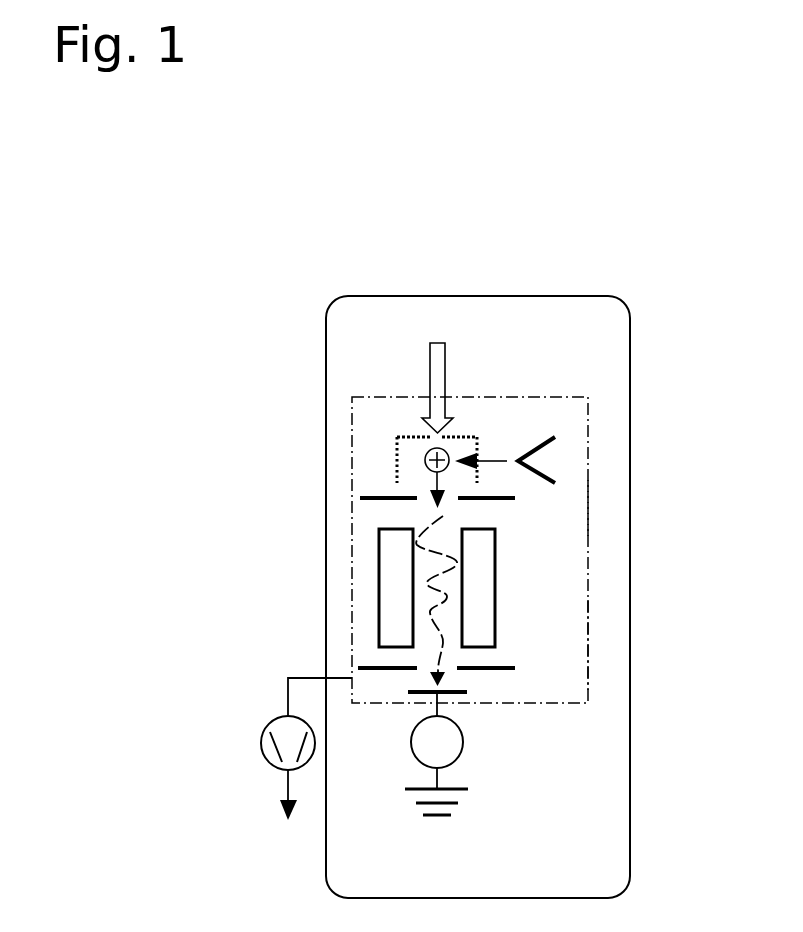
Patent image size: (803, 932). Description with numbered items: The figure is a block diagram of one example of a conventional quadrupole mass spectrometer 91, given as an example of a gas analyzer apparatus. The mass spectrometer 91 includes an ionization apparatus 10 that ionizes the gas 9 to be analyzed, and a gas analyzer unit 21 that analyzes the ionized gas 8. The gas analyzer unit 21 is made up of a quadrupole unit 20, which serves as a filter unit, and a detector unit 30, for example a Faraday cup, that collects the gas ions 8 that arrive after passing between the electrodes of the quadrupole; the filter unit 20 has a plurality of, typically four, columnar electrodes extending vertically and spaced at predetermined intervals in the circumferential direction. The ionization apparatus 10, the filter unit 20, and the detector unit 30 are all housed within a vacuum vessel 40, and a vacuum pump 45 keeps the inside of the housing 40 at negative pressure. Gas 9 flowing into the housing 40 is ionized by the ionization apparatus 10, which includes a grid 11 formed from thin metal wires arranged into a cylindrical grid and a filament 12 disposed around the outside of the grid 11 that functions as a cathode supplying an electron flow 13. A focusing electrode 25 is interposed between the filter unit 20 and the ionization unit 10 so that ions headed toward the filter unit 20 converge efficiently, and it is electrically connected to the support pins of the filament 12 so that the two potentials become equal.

The quadrupole mass spectrometer 91 is at (357, 363).
The gas 9 is at (445, 362).
The ionization apparatus 10 is at (599, 452).
The vacuum vessel 40 is at (588, 508).
The gas analyzer unit 21 is at (599, 648).
The grid 11 is at (477, 447).
The filament 12 is at (550, 437).
The electron beam 13 is at (500, 470).
The focusing electrode 25 is at (377, 497).
The quadrupole unit 20 is at (545, 567).
The ionized gas 8 is at (438, 605).
The detector unit 30 is at (502, 692).
The vacuum pump 45 is at (258, 750).